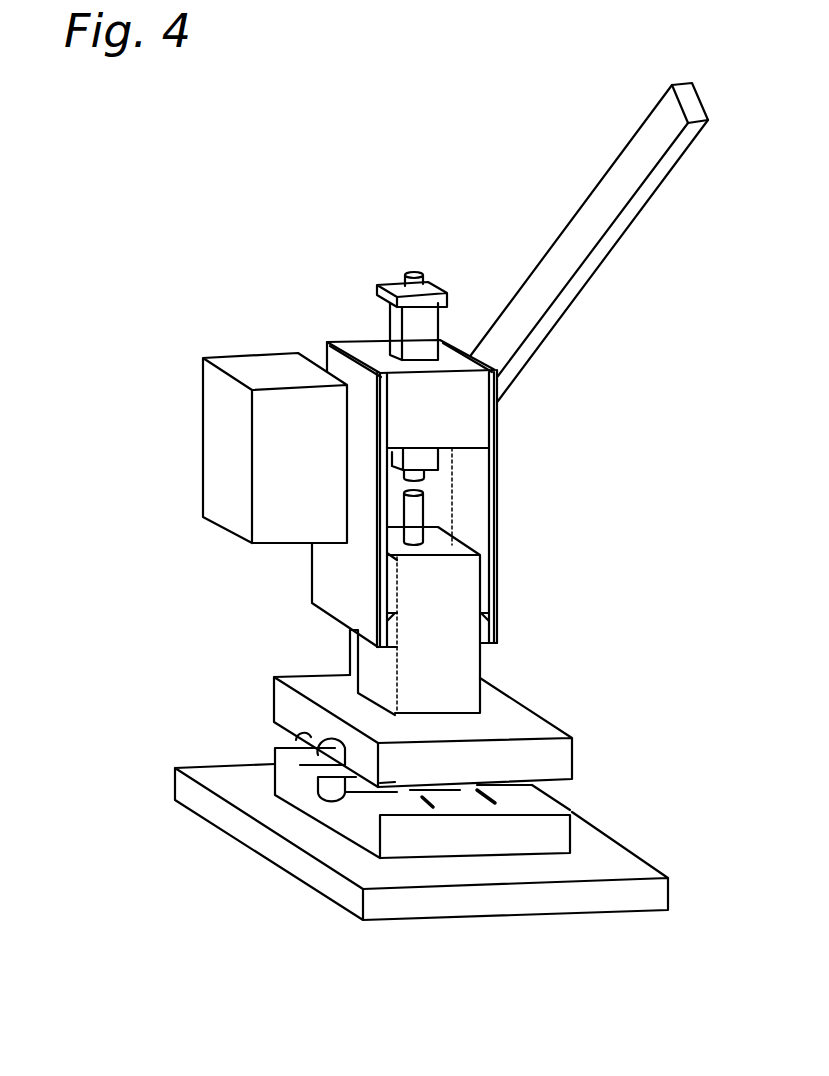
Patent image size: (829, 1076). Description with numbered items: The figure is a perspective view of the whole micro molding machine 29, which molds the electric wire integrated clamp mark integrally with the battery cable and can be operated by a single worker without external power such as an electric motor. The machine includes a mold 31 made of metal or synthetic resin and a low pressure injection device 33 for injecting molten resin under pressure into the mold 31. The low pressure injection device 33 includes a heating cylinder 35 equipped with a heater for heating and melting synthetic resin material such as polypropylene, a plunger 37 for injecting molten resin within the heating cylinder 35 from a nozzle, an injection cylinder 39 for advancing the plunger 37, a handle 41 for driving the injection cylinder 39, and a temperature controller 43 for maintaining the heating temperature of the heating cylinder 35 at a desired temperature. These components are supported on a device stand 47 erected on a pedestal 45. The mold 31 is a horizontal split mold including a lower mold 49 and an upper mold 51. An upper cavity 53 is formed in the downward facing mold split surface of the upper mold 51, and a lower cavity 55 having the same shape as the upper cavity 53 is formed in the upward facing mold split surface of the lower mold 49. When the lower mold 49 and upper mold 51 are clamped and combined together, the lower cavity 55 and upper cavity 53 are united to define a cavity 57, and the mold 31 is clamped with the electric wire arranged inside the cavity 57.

The micro molding machine 29 is at (340, 228).
The mold 31 is at (562, 963).
The low pressure injection device 33 is at (533, 456).
The heating cylinder 35 is at (482, 673).
The plunger 37 is at (415, 512).
The injection cylinder 39 is at (395, 330).
The handle 41 is at (630, 225).
The temperature controller 43 is at (222, 444).
The pedestal 45 is at (633, 852).
The device stand 47 is at (350, 663).
The lower mold 49 is at (433, 840).
The upper mold 51 is at (490, 770).
The upper cavity 53 is at (336, 748).
The lower cavity 55 is at (337, 793).
The cavity 57 is at (150, 872).